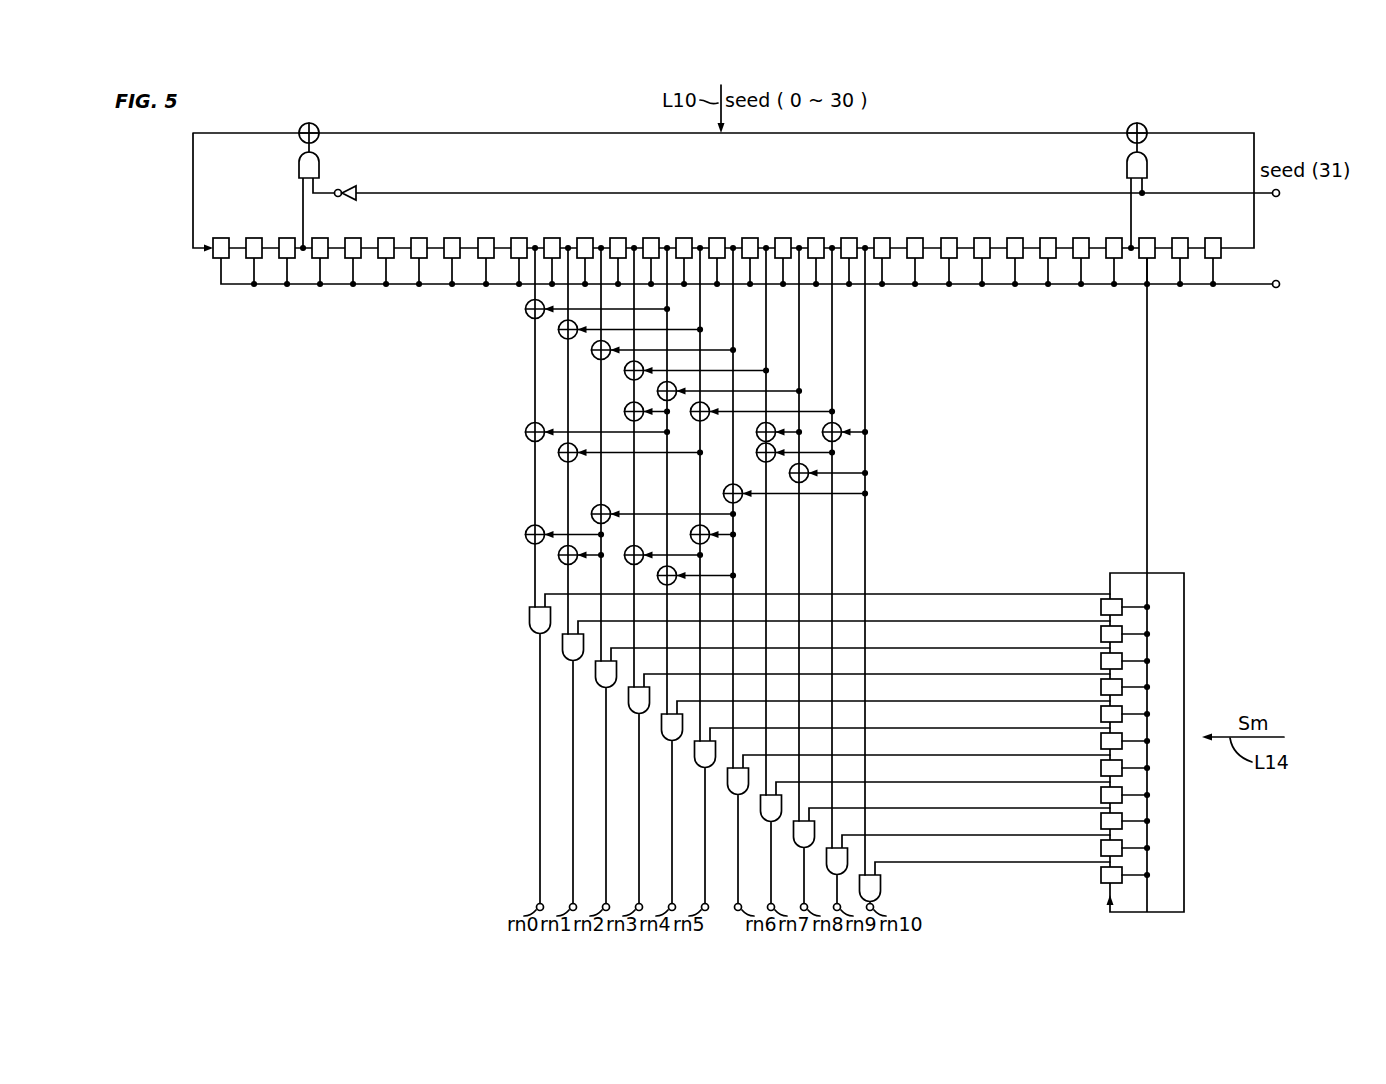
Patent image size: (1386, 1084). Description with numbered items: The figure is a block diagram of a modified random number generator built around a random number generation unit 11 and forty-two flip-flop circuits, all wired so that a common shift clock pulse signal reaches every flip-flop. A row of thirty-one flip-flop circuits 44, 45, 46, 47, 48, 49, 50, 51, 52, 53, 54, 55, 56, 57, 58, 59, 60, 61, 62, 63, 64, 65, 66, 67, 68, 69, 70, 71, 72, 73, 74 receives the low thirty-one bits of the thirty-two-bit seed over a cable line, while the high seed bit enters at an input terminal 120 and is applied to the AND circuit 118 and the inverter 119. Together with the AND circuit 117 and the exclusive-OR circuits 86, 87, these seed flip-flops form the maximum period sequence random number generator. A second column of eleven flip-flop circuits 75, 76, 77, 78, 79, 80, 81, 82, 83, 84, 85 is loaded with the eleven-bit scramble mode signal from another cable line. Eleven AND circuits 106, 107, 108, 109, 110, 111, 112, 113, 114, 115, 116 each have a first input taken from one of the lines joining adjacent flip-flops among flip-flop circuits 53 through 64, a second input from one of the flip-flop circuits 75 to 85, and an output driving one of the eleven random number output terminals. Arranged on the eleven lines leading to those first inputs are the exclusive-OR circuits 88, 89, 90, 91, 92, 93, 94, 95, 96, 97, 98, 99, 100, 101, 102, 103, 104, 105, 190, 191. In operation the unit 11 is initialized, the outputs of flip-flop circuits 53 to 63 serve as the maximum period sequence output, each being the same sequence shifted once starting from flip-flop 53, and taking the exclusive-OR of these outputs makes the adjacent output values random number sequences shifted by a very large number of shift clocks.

The random number generation unit 11 is at (1261, 121).
The flip-flop circuit 44 is at (223, 236).
The flip-flop circuit 45 is at (256, 236).
The flip-flop circuit 46 is at (289, 236).
The flip-flop circuit 47 is at (322, 236).
The flip-flop circuit 48 is at (355, 236).
The flip-flop circuit 49 is at (388, 236).
The flip-flop circuit 50 is at (421, 236).
The flip-flop circuit 51 is at (454, 236).
The flip-flop circuit 52 is at (488, 236).
The flip-flop circuit 53 is at (521, 236).
The flip-flop circuit 54 is at (554, 236).
The flip-flop circuit 55 is at (587, 236).
The flip-flop circuit 56 is at (620, 236).
The flip-flop circuit 57 is at (653, 236).
The flip-flop circuit 58 is at (686, 236).
The flip-flop circuit 59 is at (719, 236).
The flip-flop circuit 60 is at (752, 236).
The flip-flop circuit 61 is at (785, 236).
The flip-flop circuit 62 is at (818, 236).
The flip-flop circuit 63 is at (851, 236).
The flip-flop circuit 64 is at (884, 236).
The flip-flop circuit 65 is at (917, 236).
The flip-flop circuit 66 is at (951, 236).
The flip-flop circuit 67 is at (984, 236).
The flip-flop circuit 68 is at (1017, 236).
The flip-flop circuit 69 is at (1050, 236).
The flip-flop circuit 70 is at (1083, 236).
The flip-flop circuit 71 is at (1116, 236).
The flip-flop circuit 72 is at (1149, 236).
The flip-flop circuit 73 is at (1182, 236).
The flip-flop circuit 74 is at (1215, 236).
The flip-flop circuit 75 is at (1100, 607).
The flip-flop circuit 76 is at (1100, 634).
The flip-flop circuit 77 is at (1100, 661).
The flip-flop circuit 78 is at (1100, 687).
The flip-flop circuit 79 is at (1100, 714).
The flip-flop circuit 80 is at (1100, 741).
The flip-flop circuit 81 is at (1100, 768).
The flip-flop circuit 82 is at (1100, 795).
The flip-flop circuit 83 is at (1100, 821).
The flip-flop circuit 84 is at (1100, 848).
The flip-flop circuit 85 is at (1100, 875).
The exclusive-OR circuit 86 is at (305, 123).
The exclusive-OR circuit 87 is at (1144, 123).
The exclusive-OR circuit 88 is at (526, 316).
The exclusive-OR circuit 89 is at (559, 337).
The exclusive-OR circuit 90 is at (592, 357).
The exclusive-OR circuit 91 is at (625, 378).
The exclusive-OR circuit 92 is at (674, 401).
The exclusive-OR circuit 93 is at (708, 420).
The exclusive-OR circuit 94 is at (757, 440).
The exclusive-OR circuit 95 is at (839, 422).
The exclusive-OR circuit 96 is at (806, 481).
The exclusive-OR circuit 97 is at (773, 461).
The exclusive-OR circuit 98 is at (528, 441).
The exclusive-OR circuit 99 is at (561, 463).
The exclusive-OR circuit 100 is at (594, 511).
The exclusive-OR circuit 101 is at (528, 530).
The exclusive-OR circuit 102 is at (558, 555).
The exclusive-OR circuit 103 is at (627, 561).
The exclusive-OR circuit 104 is at (711, 543).
The exclusive-OR circuit 105 is at (660, 581).
The AND circuit 106 is at (529, 619).
The AND circuit 107 is at (562, 647).
The AND circuit 108 is at (595, 674).
The AND circuit 109 is at (628, 700).
The AND circuit 110 is at (661, 727).
The AND circuit 111 is at (694, 754).
The AND circuit 112 is at (727, 781).
The AND circuit 113 is at (760, 808).
The AND circuit 114 is at (793, 834).
The AND circuit 115 is at (826, 861).
The AND circuit 116 is at (881, 888).
The AND circuit 117 is at (298, 160).
The AND circuit 118 is at (1149, 164).
The inverter 119 is at (351, 186).
The input terminal 120 is at (1281, 194).
The exclusive-OR circuit 190 is at (624, 413).
The exclusive-OR circuit 191 is at (742, 502).